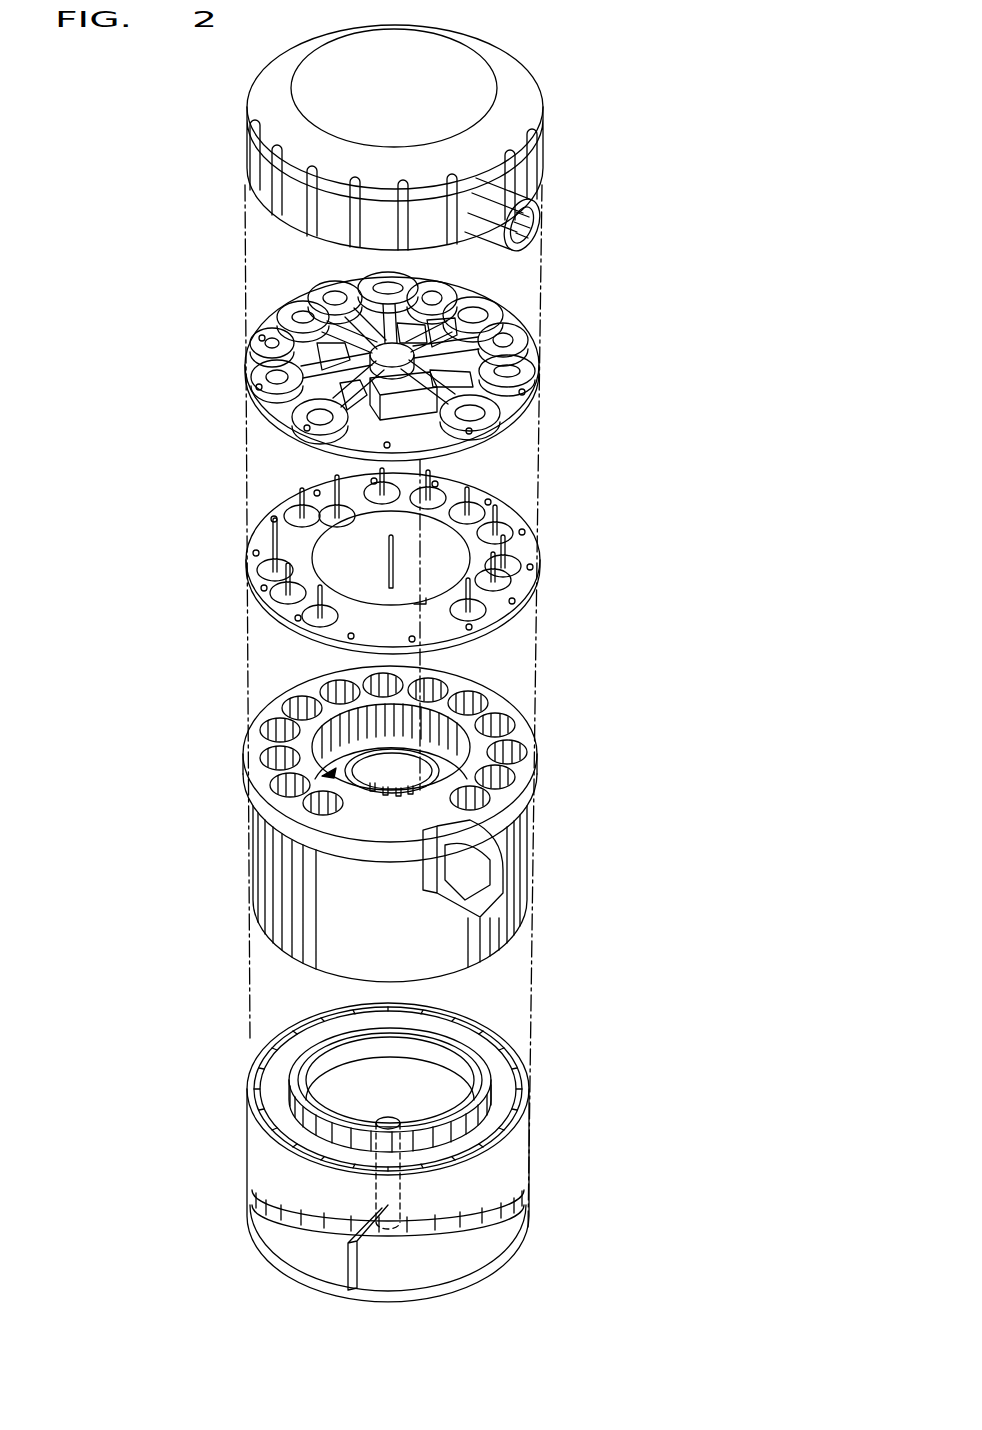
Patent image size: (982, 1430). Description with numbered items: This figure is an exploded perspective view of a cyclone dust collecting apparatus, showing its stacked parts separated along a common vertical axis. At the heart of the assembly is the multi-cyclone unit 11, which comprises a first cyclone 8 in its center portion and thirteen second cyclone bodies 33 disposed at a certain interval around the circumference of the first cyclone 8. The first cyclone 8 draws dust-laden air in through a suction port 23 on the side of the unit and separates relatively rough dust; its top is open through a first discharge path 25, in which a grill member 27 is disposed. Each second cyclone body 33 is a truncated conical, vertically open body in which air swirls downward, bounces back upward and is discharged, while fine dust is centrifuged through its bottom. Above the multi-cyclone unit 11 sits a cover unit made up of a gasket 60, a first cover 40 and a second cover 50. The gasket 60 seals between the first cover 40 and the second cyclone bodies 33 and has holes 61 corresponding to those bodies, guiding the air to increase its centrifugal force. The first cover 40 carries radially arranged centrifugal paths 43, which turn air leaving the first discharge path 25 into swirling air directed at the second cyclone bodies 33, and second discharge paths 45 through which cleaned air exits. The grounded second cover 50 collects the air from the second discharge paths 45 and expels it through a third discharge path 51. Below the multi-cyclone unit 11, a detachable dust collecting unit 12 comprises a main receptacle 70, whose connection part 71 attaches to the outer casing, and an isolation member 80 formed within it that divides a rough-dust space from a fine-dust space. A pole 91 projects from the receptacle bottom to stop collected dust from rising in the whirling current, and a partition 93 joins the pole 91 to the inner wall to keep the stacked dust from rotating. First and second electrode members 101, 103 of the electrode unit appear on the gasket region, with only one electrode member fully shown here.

The first cyclone 8 is at (300, 793).
The multi-cyclone unit 11 is at (535, 821).
The dust collecting unit 12 is at (660, 548).
The suction port 23 is at (492, 864).
The first discharge path 25 is at (395, 753).
The grill member 27 is at (425, 757).
The second cyclone body 33 is at (278, 730).
The first cover 40 is at (552, 368).
The centrifugal path 43 is at (522, 304).
The second discharge path 45 is at (515, 298).
The second cover 50 is at (547, 132).
The third discharge path 51 is at (540, 232).
The gasket 60 is at (551, 556).
The holes 61 is at (287, 499).
The main receptacle 70 is at (522, 1185).
The connection part 71 is at (247, 1105).
The isolation member 80 is at (478, 1118).
The pole 91 is at (400, 1200).
The partition 93 is at (363, 1260).
The first electrode member 101 is at (387, 540).
The second electrode member 103 is at (290, 497).